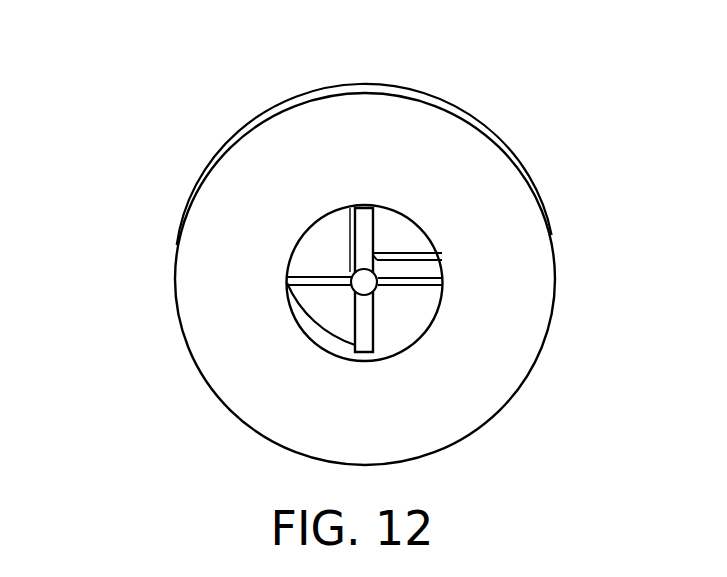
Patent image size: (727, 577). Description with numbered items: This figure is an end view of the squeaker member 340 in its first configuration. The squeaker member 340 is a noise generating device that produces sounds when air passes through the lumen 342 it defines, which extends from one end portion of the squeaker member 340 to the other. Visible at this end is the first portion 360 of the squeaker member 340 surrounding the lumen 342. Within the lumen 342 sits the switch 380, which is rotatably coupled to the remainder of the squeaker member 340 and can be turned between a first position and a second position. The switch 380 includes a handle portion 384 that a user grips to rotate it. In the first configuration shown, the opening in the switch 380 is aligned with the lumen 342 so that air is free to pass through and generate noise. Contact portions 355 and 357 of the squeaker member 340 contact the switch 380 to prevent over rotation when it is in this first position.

The squeaker member 340 is at (239, 83).
The lumen 342 is at (400, 233).
The contact portion 355 is at (348, 233).
The contact portion 357 is at (372, 325).
The first portion 360 is at (505, 257).
The switch 380 is at (363, 207).
The handle portion 384 is at (350, 297).